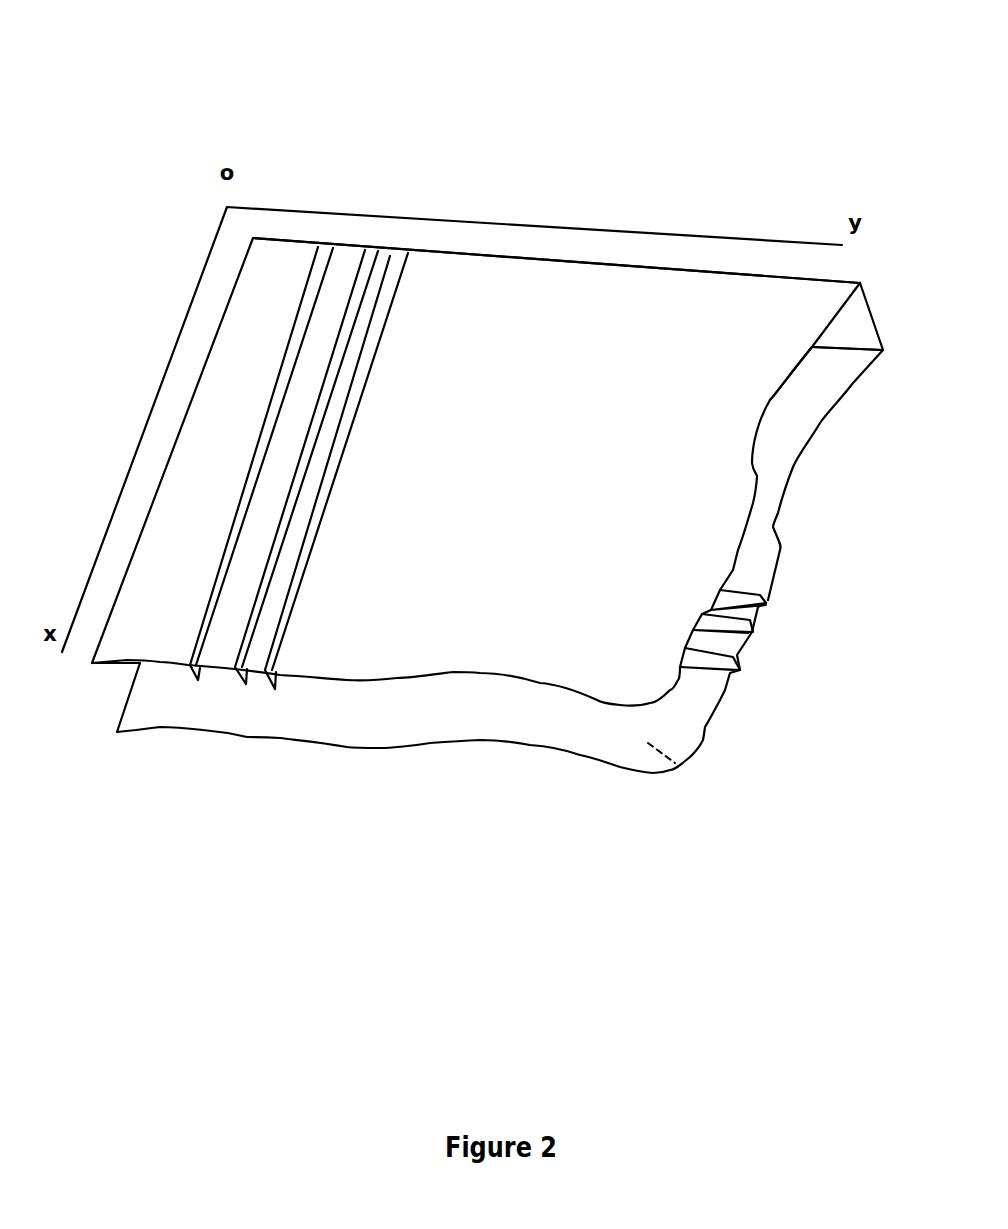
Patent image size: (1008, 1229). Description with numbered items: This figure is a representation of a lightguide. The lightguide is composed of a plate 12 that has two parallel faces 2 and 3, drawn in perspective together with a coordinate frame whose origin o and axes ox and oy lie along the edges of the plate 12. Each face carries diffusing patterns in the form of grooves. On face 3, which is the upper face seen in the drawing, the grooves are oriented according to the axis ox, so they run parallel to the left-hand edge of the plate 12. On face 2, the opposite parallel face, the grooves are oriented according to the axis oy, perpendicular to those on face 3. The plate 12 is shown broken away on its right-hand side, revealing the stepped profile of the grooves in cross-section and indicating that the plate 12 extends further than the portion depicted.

The face 2 is at (680, 767).
The face 3 is at (562, 431).
The plate 12 is at (825, 388).